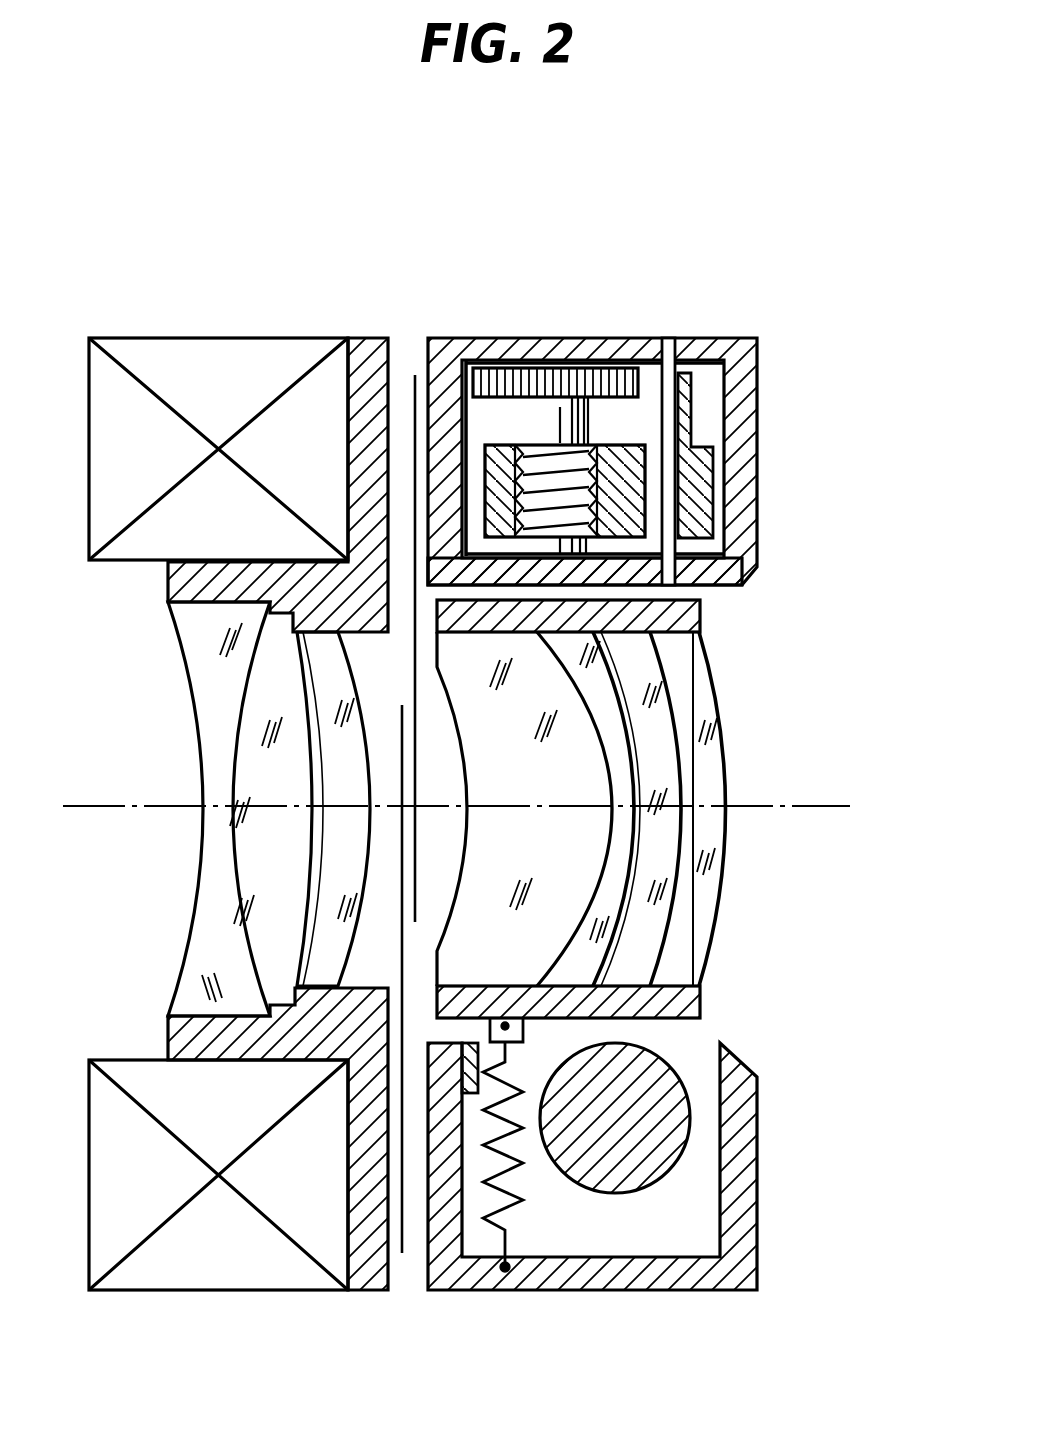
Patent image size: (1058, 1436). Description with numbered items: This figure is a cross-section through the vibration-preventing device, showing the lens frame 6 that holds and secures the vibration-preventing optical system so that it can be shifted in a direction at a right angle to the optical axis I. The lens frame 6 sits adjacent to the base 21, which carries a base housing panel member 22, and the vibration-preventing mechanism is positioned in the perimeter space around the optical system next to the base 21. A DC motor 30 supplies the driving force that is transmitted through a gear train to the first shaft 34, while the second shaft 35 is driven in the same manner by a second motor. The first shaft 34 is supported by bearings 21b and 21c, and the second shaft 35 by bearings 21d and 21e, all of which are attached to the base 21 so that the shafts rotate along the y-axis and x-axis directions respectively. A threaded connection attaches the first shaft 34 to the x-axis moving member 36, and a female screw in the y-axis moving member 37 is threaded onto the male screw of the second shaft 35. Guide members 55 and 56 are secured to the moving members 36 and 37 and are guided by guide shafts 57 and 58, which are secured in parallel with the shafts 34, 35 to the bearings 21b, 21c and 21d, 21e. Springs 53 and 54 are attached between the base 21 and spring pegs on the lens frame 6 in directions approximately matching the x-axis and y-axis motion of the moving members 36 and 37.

The optical axis I is at (92, 806).
The lens frame 6 is at (697, 628).
The base 21 is at (443, 362).
The bearing 21b is at (571, 342).
The bearing 21d is at (624, 455).
The bearing 21c is at (671, 604).
The bearing 21e is at (640, 577).
The base housing panel member 22 is at (750, 480).
The DC motor 30 is at (660, 1135).
The first shaft 34 is at (530, 391).
The second shaft 35 is at (538, 418).
The x-axis moving member 36 is at (591, 342).
The y-axis moving member 37 is at (591, 342).
The spring 53 is at (571, 1192).
The spring 54 is at (512, 1205).
The guide member 55 is at (800, 446).
The guide member 56 is at (700, 405).
The guide shaft 57 is at (751, 407).
The guide shaft 58 is at (669, 373).